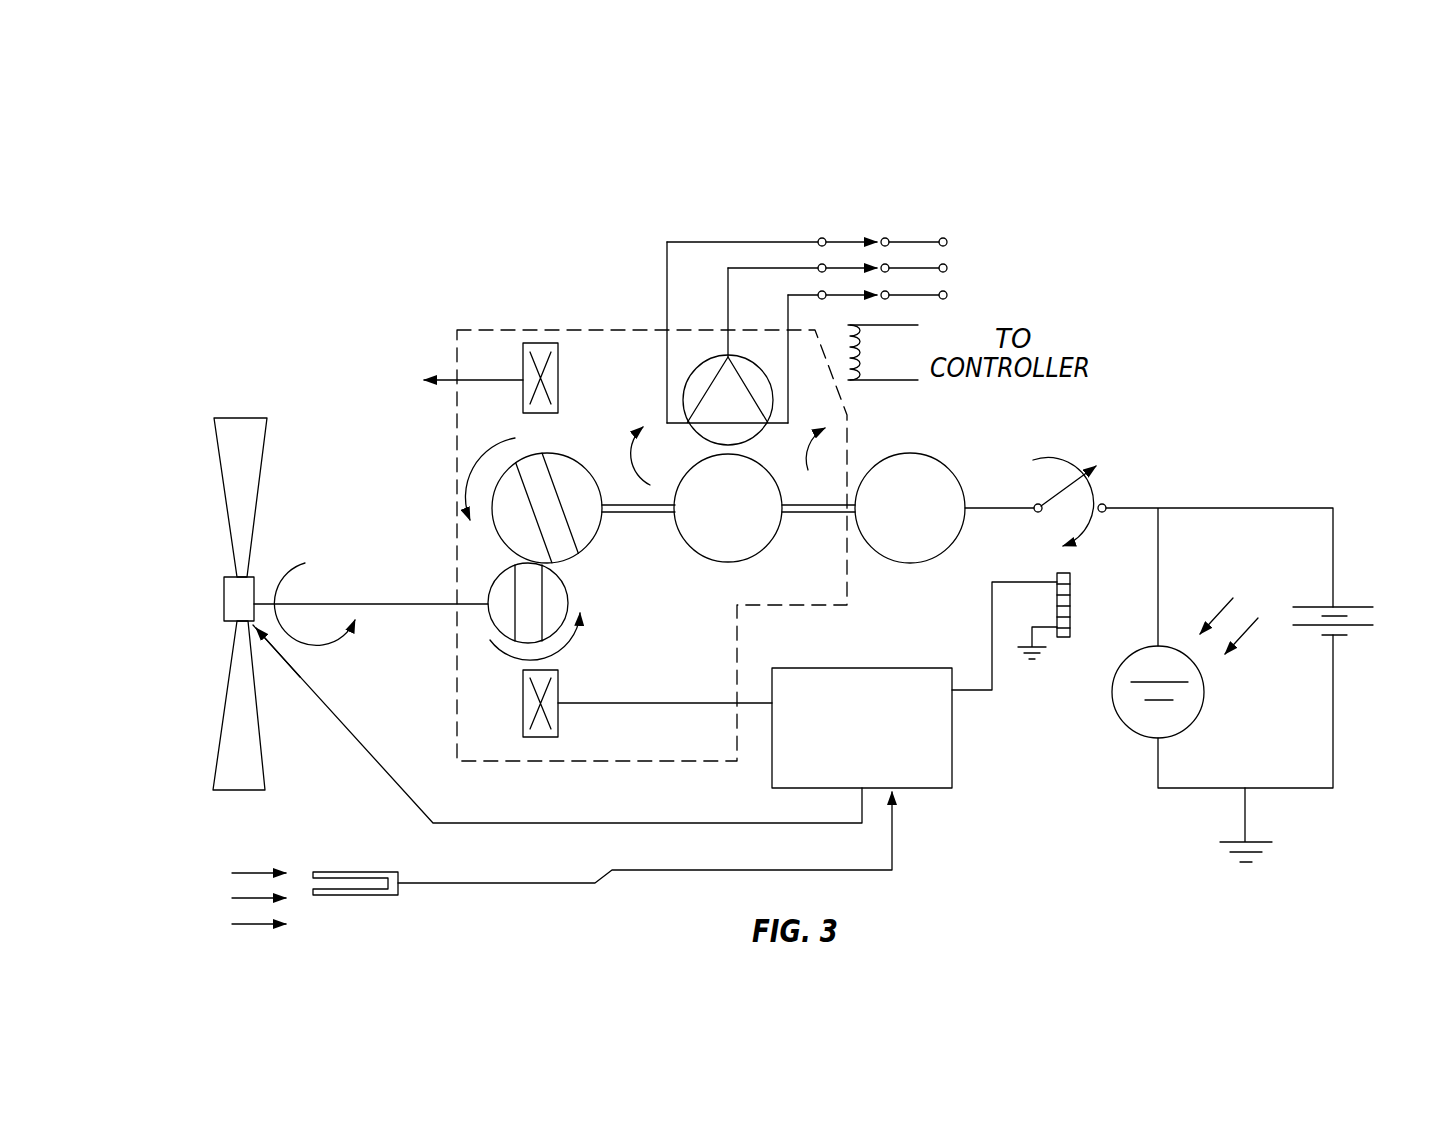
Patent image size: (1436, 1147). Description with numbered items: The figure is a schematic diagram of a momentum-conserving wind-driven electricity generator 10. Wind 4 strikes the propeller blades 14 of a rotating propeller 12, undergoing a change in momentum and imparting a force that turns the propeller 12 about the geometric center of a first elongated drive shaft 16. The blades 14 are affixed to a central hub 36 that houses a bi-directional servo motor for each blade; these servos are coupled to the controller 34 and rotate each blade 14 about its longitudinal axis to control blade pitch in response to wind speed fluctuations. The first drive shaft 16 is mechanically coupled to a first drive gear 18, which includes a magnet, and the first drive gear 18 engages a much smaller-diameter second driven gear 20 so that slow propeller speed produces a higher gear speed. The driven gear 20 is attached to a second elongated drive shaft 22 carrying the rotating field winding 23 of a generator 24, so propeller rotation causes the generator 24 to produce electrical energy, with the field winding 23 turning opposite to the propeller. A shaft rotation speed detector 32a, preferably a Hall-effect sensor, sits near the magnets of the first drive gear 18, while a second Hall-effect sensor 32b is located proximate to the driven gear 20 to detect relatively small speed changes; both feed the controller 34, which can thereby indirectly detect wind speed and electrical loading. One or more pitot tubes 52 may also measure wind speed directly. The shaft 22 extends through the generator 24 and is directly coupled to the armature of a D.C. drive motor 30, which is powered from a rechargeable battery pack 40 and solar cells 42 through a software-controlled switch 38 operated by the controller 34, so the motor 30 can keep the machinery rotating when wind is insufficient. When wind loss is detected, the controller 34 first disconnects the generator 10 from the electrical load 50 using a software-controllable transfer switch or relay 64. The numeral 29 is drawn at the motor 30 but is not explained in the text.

The momentum-conserving wind-driven electricity generator 10 is at (1008, 165).
The propeller 12 is at (174, 589).
The propeller blades 14 is at (222, 483).
The central hub 36 is at (224, 600).
The first elongated drive shaft 16 is at (335, 604).
The first drive gear 18 is at (568, 595).
The second driven gear 20 is at (548, 453).
The second elongated drive shaft 22 is at (665, 515).
The rotating field winding 23 is at (752, 533).
The generator 24 is at (728, 516).
The second motor 29 is at (903, 470).
The D.C. drive motor 30 is at (934, 485).
The shaft rotation speed detector 32a is at (558, 700).
The second Hall-effect sensor 32b is at (540, 343).
The controller 34 is at (945, 790).
The software-controlled switch 38 is at (1085, 440).
The rechargeable battery pack 40 is at (1271, 685).
The solar cells 42 is at (1200, 710).
The electrical load 50 is at (1063, 270).
The pitot tube 52 is at (350, 872).
The transfer switch or relay 64 is at (800, 268).
The wind 4 is at (268, 873).